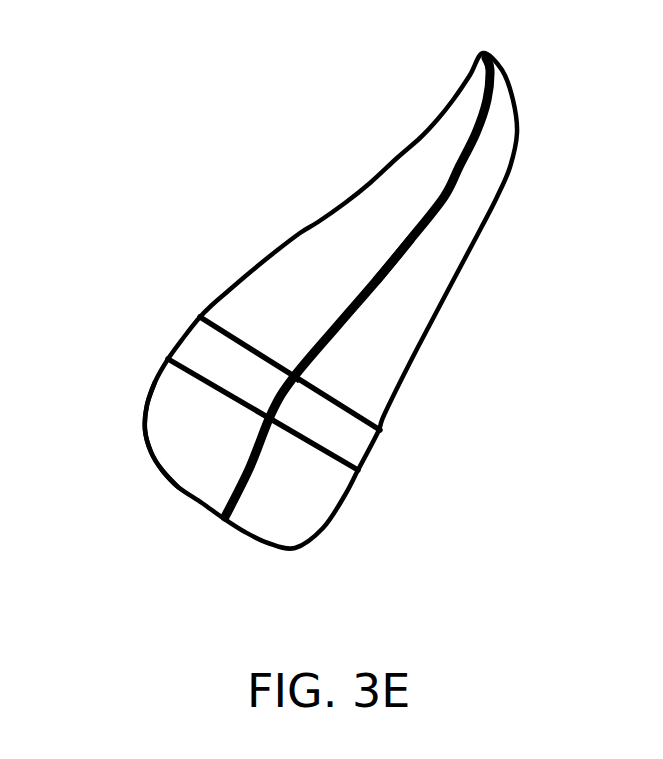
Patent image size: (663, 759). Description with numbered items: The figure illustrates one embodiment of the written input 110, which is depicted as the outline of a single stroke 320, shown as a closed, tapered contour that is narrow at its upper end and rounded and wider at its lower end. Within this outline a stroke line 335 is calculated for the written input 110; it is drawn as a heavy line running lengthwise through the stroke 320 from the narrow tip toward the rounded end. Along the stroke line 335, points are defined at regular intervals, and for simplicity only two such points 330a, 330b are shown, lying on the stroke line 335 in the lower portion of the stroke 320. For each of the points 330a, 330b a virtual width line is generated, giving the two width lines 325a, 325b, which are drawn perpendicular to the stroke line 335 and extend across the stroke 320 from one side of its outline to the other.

The written input 110 is at (127, 186).
The stroke 320 is at (150, 452).
The virtual width line 325a is at (203, 382).
The virtual width line 325b is at (235, 345).
The point 330a is at (267, 420).
The point 330b is at (298, 382).
The stroke line 335 is at (395, 268).